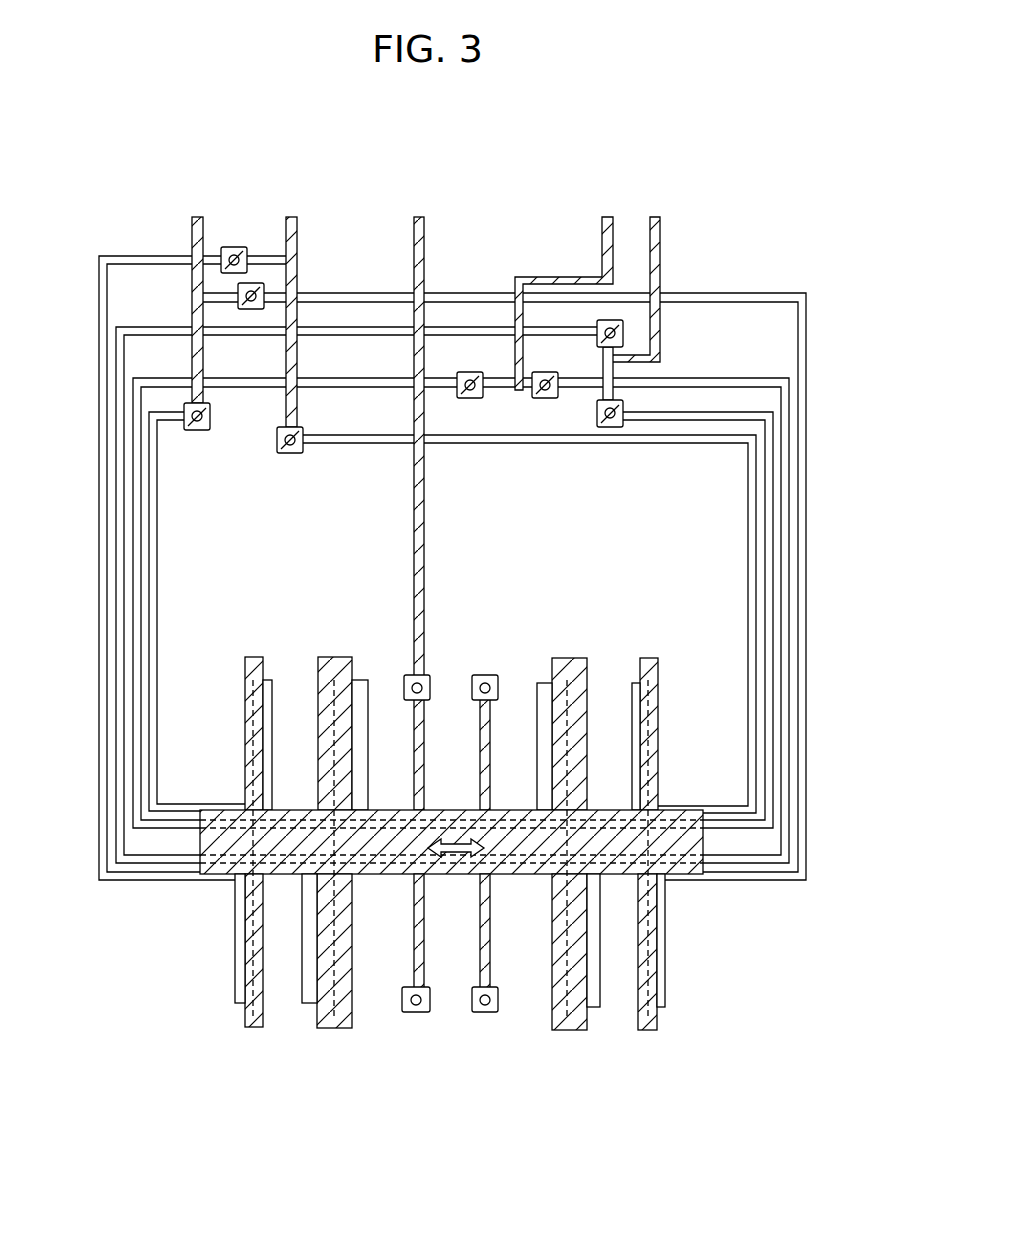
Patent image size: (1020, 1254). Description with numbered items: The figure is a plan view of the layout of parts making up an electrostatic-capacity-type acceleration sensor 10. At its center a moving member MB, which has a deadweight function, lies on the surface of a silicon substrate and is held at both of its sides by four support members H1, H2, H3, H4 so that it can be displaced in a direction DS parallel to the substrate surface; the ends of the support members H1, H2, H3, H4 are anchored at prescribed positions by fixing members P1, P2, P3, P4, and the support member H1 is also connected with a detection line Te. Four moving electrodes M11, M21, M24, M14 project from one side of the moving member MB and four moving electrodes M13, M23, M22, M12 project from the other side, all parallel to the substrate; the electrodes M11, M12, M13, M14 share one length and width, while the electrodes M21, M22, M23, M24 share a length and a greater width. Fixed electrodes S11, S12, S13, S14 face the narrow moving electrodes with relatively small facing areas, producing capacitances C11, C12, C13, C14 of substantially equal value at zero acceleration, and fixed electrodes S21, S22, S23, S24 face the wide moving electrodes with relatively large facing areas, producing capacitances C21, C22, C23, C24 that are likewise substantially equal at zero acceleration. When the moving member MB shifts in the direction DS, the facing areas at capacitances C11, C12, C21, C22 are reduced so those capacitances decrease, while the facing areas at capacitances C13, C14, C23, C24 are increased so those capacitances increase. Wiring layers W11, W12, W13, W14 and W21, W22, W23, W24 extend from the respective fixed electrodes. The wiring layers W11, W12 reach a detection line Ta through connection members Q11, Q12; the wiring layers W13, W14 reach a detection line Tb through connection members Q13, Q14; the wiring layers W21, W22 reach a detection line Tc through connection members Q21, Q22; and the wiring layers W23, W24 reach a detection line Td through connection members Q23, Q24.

The electrostatic-capacity-type acceleration sensor 10 is at (145, 970).
The detection line Ta is at (192, 237).
The detection line Tb is at (289, 216).
The detection line Tc is at (604, 220).
The detection line Td is at (653, 232).
The detection line Te is at (414, 247).
The connection member Q11 is at (207, 432).
The connection member Q12 is at (252, 310).
The connection member Q13 is at (233, 247).
The connection member Q14 is at (292, 453).
The connection member Q21 is at (460, 378).
The connection member Q22 is at (544, 399).
The connection member Q23 is at (610, 321).
The connection member Q24 is at (610, 428).
The wiring layer W11 is at (158, 470).
The wiring layer W12 is at (806, 360).
The wiring layer W13 is at (99, 780).
The wiring layer W14 is at (748, 760).
The wiring layer W21 is at (141, 530).
The wiring layer W22 is at (789, 512).
The wiring layer W23 is at (116, 660).
The wiring layer W24 is at (773, 692).
The capacitance C11 is at (249, 683).
The capacitance C12 is at (700, 968).
The capacitance C13 is at (223, 996).
The capacitance C14 is at (652, 678).
The capacitance C21 is at (359, 678).
The capacitance C22 is at (574, 991).
The capacitance C23 is at (309, 996).
The capacitance C24 is at (542, 683).
The moving electrode M11 is at (246, 682).
The moving electrode M12 is at (650, 1035).
The moving electrode M13 is at (248, 1015).
The moving electrode M14 is at (660, 683).
The moving electrode M21 is at (330, 660).
The moving electrode M22 is at (555, 1030).
The moving electrode M23 is at (321, 1022).
The moving electrode M24 is at (565, 658).
The fixed electrode S11 is at (268, 690).
The fixed electrode S12 is at (665, 950).
The fixed electrode S13 is at (236, 945).
The fixed electrode S14 is at (636, 700).
The fixed electrode S21 is at (362, 690).
The fixed electrode S22 is at (597, 935).
The fixed electrode S23 is at (309, 937).
The fixed electrode S24 is at (540, 700).
The support member H1 is at (414, 765).
The support member H2 is at (413, 925).
The support member H3 is at (481, 725).
The support member H4 is at (481, 925).
The fixing member P1 is at (405, 688).
The fixing member P2 is at (405, 1011).
The fixing member P3 is at (474, 688).
The fixing member P4 is at (474, 1011).
The moving member MB is at (520, 878).
The direction of displacement DS is at (455, 838).